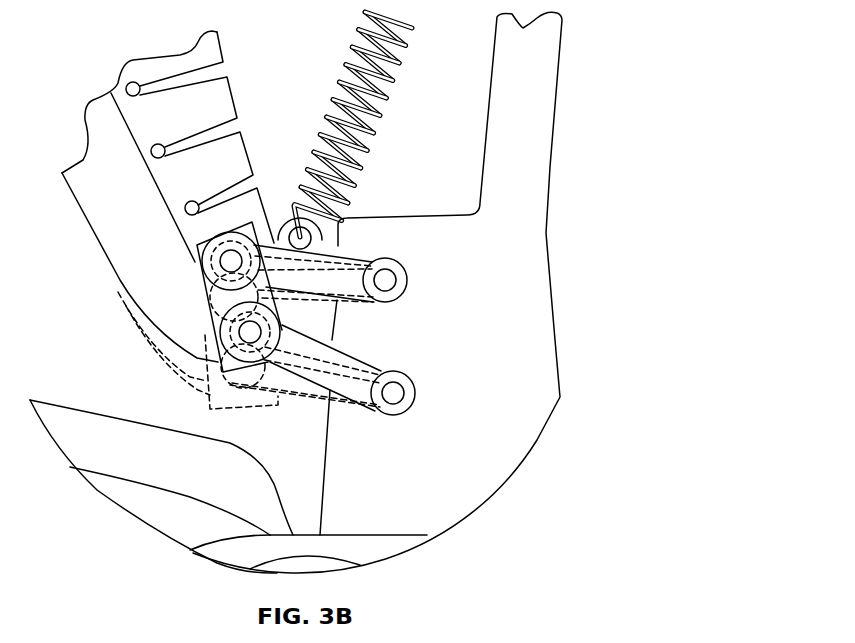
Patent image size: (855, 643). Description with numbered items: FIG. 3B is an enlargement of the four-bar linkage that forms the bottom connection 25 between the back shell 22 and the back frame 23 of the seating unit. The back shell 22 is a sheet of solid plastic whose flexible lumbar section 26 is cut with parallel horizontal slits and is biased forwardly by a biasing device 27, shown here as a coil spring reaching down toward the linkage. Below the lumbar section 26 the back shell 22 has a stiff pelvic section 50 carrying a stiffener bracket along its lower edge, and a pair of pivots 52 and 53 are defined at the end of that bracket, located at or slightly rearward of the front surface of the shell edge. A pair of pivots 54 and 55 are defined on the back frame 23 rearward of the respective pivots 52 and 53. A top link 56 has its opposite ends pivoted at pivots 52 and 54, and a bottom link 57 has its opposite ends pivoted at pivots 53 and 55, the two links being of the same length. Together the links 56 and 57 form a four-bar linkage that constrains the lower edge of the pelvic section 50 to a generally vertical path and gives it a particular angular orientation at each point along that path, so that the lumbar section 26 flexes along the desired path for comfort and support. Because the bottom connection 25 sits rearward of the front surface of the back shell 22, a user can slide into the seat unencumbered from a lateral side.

The back shell 22 is at (193, 55).
The back frame 23 is at (558, 347).
The bottom connection 25 is at (443, 267).
The lumbar section 26 is at (170, 110).
The biasing device 27 is at (400, 43).
The pelvic section 50 is at (150, 315).
The pivot 52 is at (226, 258).
The pivot 53 is at (248, 337).
The pivot 54 is at (386, 278).
The pivot 55 is at (393, 393).
The top link 56 is at (362, 290).
The bottom link 57 is at (360, 390).